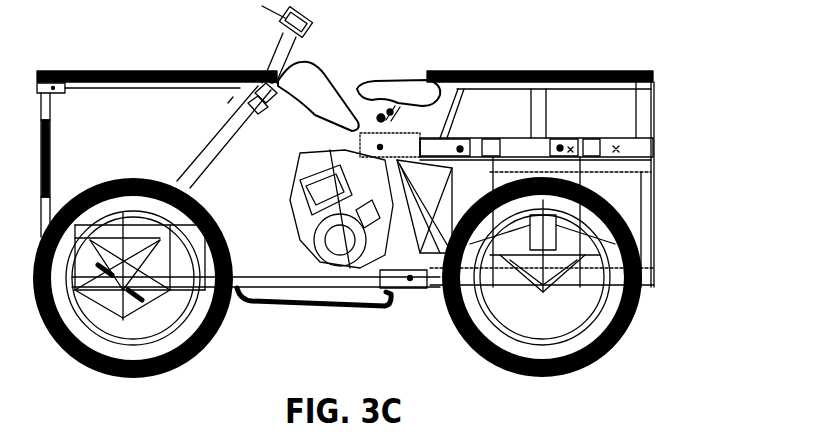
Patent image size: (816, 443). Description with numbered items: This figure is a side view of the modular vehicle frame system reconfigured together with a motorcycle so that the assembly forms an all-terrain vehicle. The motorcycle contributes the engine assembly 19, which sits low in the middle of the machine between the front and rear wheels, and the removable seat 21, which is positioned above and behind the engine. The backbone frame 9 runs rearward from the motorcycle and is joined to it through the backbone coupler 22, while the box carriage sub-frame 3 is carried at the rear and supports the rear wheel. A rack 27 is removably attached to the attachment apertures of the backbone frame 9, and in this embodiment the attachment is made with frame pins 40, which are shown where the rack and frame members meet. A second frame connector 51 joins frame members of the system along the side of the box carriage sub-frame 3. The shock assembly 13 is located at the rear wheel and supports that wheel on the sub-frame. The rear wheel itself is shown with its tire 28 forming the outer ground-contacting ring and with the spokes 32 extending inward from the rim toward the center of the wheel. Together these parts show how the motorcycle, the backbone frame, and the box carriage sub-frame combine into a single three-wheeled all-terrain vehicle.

The box carriage sub-frame 3 is at (602, 267).
The backbone frame 9 is at (653, 83).
The shock assembly 13 is at (545, 238).
The engine assembly 19 is at (335, 255).
The removable seat 21 is at (397, 82).
The backbone coupler 22 is at (460, 150).
The rack 27 is at (497, 72).
The tire 28 is at (638, 268).
The spokes 32 is at (572, 302).
The frame pin 40 is at (272, 80).
The second frame connector 51 is at (653, 150).